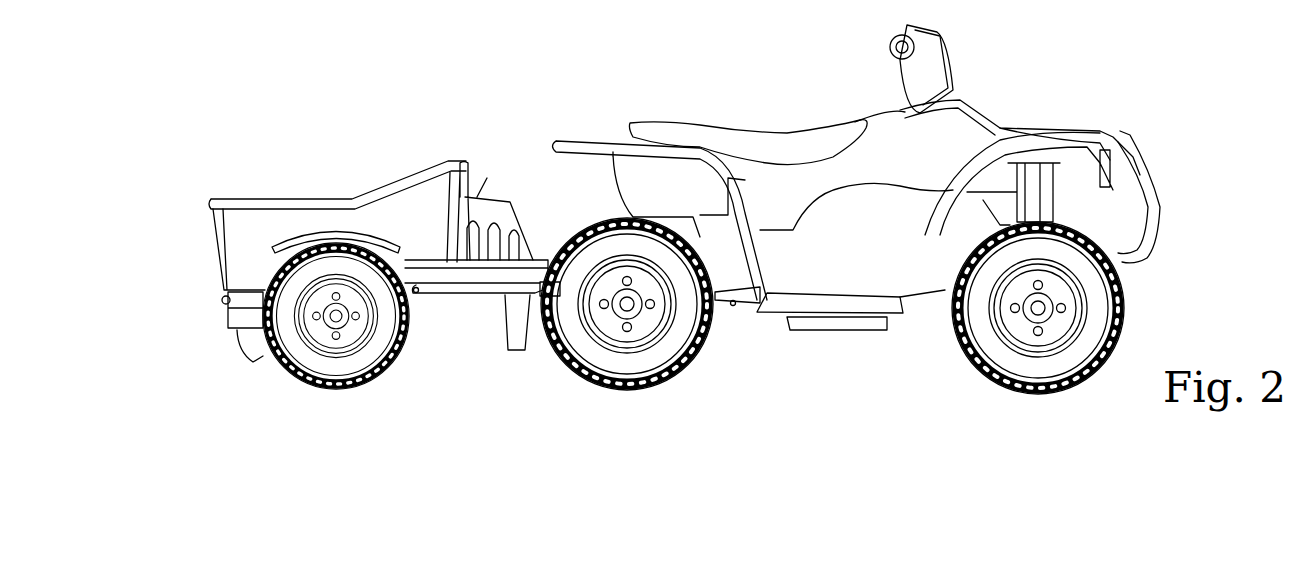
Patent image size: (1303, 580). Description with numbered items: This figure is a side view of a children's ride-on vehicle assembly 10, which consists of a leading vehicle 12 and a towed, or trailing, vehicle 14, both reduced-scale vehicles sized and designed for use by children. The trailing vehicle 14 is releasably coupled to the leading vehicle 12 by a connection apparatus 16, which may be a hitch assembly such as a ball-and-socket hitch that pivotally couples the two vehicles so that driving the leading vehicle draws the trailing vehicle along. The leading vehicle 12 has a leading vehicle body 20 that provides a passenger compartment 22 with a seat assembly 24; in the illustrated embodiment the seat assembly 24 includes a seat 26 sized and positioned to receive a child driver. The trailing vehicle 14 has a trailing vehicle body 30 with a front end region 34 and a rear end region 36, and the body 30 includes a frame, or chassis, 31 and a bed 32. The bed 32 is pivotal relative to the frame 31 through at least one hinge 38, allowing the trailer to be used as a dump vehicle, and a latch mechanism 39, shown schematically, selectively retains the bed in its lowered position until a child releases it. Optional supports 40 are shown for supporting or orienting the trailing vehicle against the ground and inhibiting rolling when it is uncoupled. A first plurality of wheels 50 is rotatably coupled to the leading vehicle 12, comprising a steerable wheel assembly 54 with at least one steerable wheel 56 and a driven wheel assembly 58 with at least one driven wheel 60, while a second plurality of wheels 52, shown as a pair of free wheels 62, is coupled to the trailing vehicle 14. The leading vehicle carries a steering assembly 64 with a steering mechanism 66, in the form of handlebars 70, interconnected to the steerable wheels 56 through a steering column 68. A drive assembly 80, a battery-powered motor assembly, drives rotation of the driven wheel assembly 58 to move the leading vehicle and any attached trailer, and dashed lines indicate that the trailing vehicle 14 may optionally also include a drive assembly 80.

The children's ride-on vehicle assembly 10 is at (462, 92).
The leading vehicle 12 is at (763, 86).
The trailing vehicle 14 is at (280, 156).
The connection apparatus 16 is at (560, 238).
The leading vehicle body 20 is at (1062, 130).
The passenger compartment 22 is at (683, 103).
The seat assembly 24 is at (745, 130).
The seat 26 is at (795, 164).
The trailing vehicle body 30 is at (203, 202).
The frame 31 is at (472, 298).
The bed 32 is at (275, 197).
The front end region 34 is at (538, 193).
The rear end region 36 is at (195, 248).
The hinge 38 is at (221, 298).
The latch mechanism 39 is at (478, 173).
The supports 40 is at (240, 346).
The first plurality of wheels 50 is at (545, 357).
The second plurality of wheels 52 is at (310, 388).
The steerable wheel assembly 54 is at (958, 354).
The steerable wheel 56 is at (1092, 371).
The driven wheel assembly 58 is at (687, 372).
The driven wheel 60 is at (595, 380).
The free wheels 62 is at (375, 376).
The steering assembly 64 is at (964, 53).
The steering mechanism 66 is at (897, 38).
The steering column 68 is at (955, 105).
The handlebars 70 is at (890, 58).
The drive assembly 80 is at (418, 299).